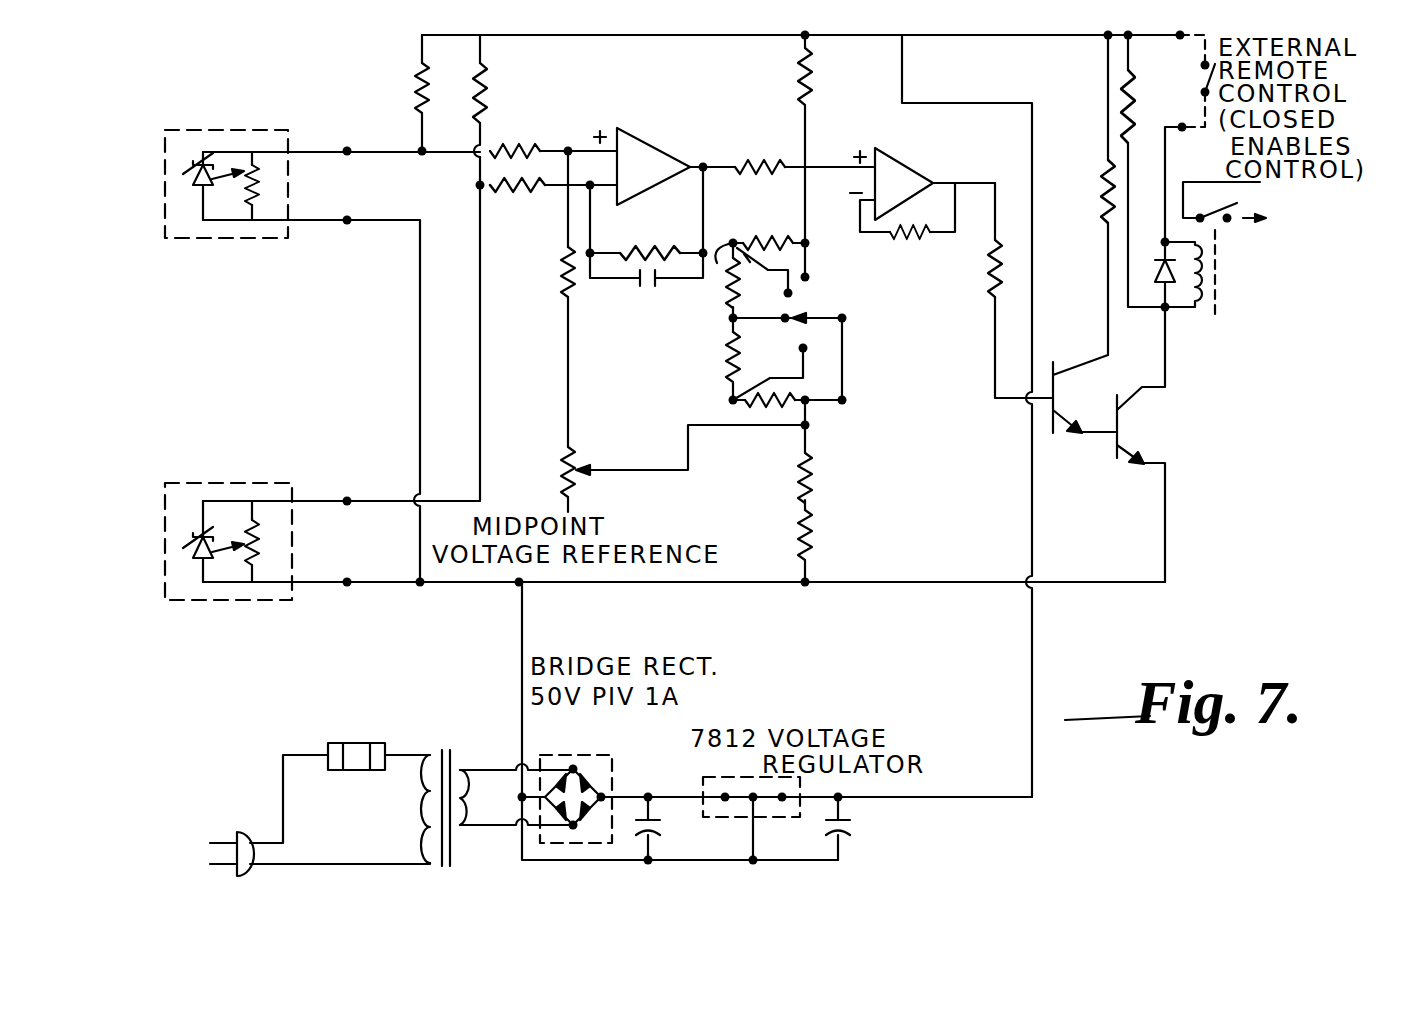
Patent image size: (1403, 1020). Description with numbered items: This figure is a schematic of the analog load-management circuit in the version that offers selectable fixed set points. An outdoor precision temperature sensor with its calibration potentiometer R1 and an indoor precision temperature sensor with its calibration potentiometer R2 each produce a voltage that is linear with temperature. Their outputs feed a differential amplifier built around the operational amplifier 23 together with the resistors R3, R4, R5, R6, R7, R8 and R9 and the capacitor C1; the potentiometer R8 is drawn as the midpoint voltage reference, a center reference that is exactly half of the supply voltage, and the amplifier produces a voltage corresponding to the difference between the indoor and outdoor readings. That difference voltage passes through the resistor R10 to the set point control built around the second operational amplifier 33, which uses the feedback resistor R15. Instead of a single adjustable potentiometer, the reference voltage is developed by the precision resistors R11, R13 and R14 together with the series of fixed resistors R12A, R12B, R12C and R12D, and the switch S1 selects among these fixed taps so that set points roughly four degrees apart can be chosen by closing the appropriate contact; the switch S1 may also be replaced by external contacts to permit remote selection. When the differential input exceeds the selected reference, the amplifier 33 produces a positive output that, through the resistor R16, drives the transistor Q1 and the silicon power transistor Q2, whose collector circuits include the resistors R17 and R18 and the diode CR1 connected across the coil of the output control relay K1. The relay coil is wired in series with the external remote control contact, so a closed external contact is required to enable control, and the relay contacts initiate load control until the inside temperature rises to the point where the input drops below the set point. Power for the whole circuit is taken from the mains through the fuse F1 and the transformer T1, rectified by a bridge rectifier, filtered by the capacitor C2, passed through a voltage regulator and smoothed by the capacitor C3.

The operational amplifier 23 is at (682, 124).
The second operational amplifier 33 is at (942, 166).
The calibration potentiometer R1 is at (253, 215).
The calibration potentiometer R2 is at (259, 516).
The resistor R3 is at (396, 93).
The resistor R4 is at (508, 96).
The resistor R5 is at (553, 124).
The resistor R6 is at (547, 218).
The resistor R7 is at (531, 299).
The resistor R8 is at (647, 448).
The resistor R9 is at (647, 213).
The resistor R10 is at (805, 143).
The resistor R11 is at (841, 158).
The fixed resistor R12A is at (806, 283).
The fixed resistor R12B is at (760, 239).
The fixed resistor R12C is at (727, 333).
The fixed resistor R12D is at (827, 381).
The resistor R13 is at (838, 455).
The resistor R14 is at (841, 541).
The resistor R15 is at (907, 244).
The resistor R16 is at (994, 290).
The resistor R17 is at (1100, 205).
The resistor R18 is at (1158, 171).
The switch S1 is at (808, 359).
The capacitor C1 is at (646, 298).
The filter capacitor C2 is at (683, 844).
The capacitor C3 is at (887, 830).
The diode CR1 is at (1150, 295).
The transistor Q1 is at (1092, 444).
The silicon power transistor Q2 is at (1239, 444).
The output control relay K1 is at (1276, 286).
The transformer T1 is at (446, 763).
The fuse F1 is at (340, 803).